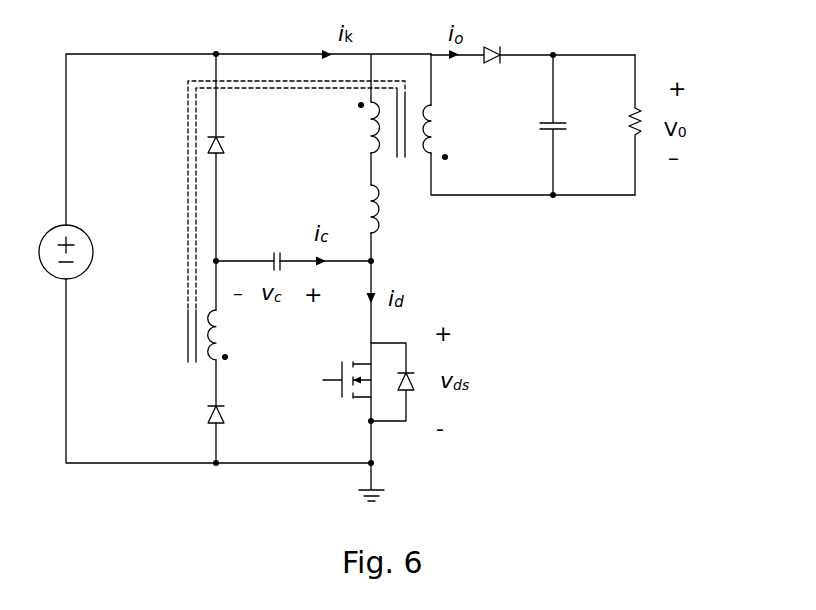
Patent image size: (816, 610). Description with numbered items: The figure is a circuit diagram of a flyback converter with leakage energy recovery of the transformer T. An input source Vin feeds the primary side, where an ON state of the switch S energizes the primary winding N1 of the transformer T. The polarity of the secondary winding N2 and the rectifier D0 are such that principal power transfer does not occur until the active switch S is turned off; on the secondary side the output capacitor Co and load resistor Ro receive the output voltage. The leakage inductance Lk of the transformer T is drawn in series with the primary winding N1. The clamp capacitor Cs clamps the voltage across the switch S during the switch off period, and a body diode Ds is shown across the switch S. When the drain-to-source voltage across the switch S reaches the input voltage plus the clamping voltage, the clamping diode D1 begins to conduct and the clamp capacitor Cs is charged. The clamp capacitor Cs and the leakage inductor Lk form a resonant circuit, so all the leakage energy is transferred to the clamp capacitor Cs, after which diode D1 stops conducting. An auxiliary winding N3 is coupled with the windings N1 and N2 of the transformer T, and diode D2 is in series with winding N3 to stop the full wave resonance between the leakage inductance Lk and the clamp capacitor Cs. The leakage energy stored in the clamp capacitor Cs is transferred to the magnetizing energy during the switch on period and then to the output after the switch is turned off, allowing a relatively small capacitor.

The input voltage source Vin is at (89, 252).
The clamping diode D1 is at (237, 147).
The diode D2 is at (196, 419).
The transformer T is at (282, 210).
The primary winding N1 is at (351, 127).
The secondary winding N2 is at (529, 124).
The winding N3 is at (234, 335).
The leakage inductance Lk is at (354, 208).
The rectifier D0 is at (533, 43).
The output capacitor Co is at (537, 125).
The load resistor Ro is at (614, 125).
The clamp capacitor Cs is at (277, 245).
The switch S is at (347, 398).
The switch body diode Ds is at (394, 398).